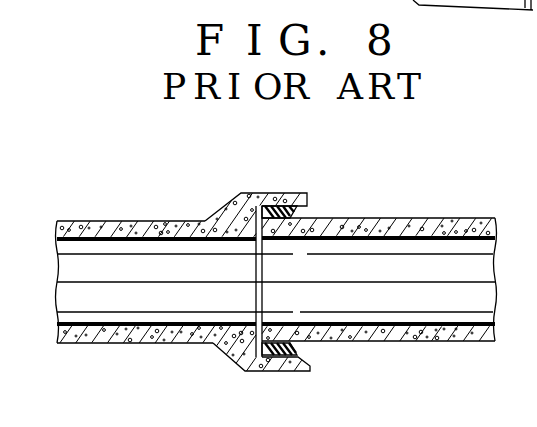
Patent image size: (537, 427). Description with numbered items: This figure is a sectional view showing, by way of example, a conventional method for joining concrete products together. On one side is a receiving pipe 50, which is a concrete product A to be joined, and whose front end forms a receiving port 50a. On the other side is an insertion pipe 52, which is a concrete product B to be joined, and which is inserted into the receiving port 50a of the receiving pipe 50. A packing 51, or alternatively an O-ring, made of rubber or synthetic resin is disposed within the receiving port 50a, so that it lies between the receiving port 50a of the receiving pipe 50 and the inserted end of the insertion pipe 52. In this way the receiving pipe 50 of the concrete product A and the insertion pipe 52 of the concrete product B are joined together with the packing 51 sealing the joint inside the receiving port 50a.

The receiving pipe 50 is at (98, 221).
The concrete product A is at (168, 220).
The receiving port 50a is at (274, 200).
The packing 51 is at (300, 208).
The insertion pipe 52 is at (416, 218).
The concrete product B is at (489, 218).